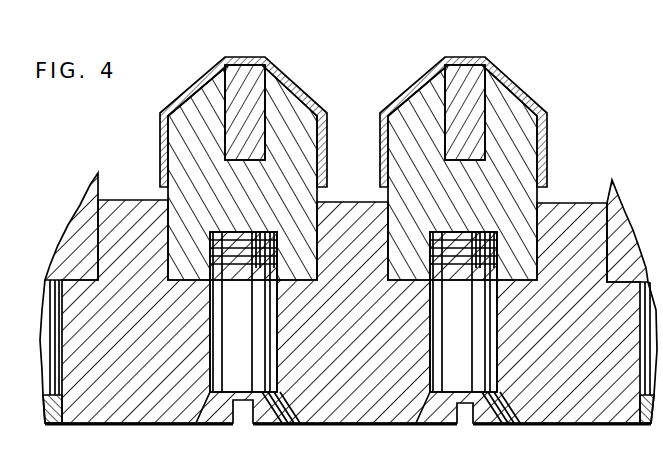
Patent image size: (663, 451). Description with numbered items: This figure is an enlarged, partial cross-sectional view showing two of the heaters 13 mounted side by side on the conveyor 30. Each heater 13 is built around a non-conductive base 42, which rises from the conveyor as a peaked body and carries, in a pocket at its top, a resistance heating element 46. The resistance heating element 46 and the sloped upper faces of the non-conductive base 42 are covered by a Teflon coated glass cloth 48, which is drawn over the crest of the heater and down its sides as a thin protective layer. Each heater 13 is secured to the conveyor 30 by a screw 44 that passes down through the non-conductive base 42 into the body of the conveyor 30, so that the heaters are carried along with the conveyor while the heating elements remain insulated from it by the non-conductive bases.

The heater 13 is at (231, 57).
The conveyor 30 is at (142, 345).
The non-conductive base 42 is at (254, 208).
The screw 44 is at (252, 340).
The resistance heating element 46 is at (250, 119).
The Teflon coated glass cloth 48 is at (318, 102).